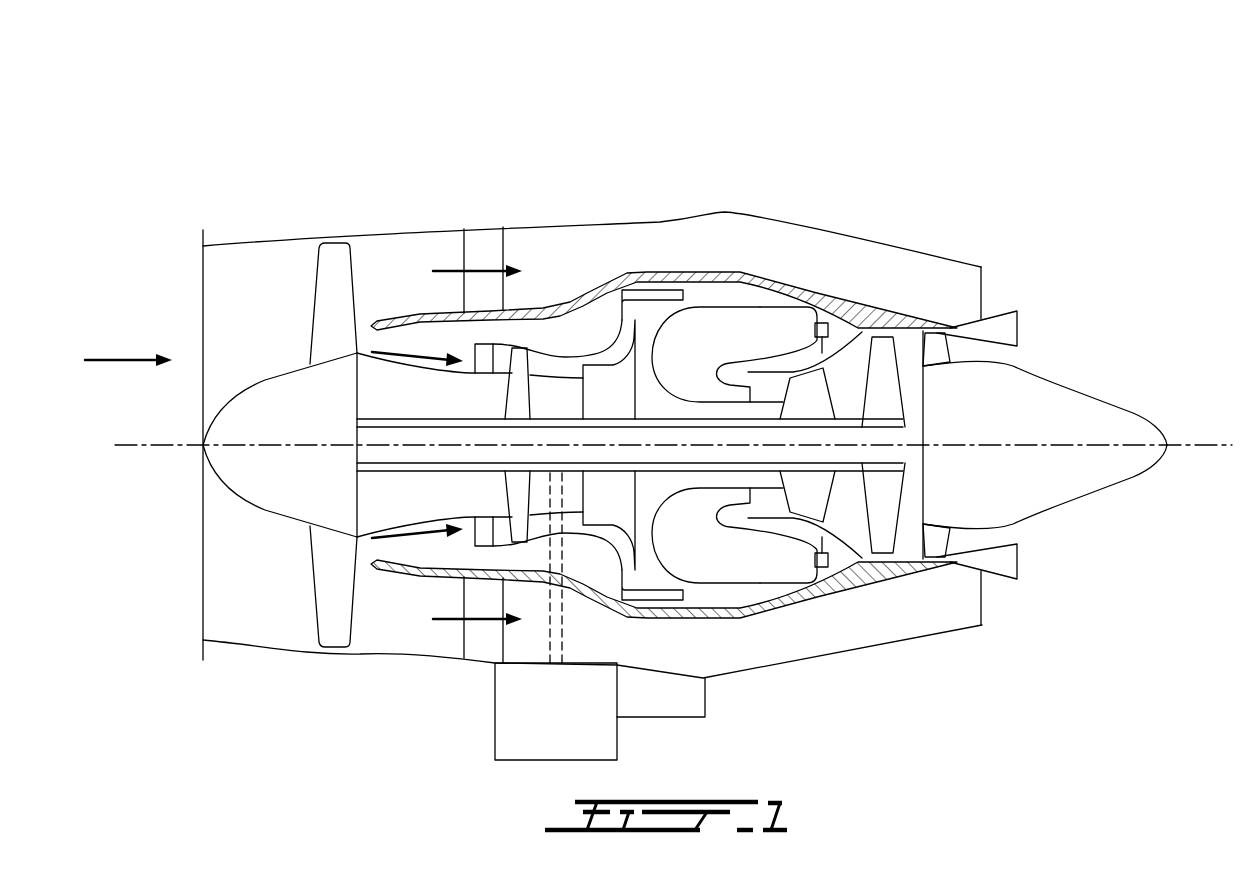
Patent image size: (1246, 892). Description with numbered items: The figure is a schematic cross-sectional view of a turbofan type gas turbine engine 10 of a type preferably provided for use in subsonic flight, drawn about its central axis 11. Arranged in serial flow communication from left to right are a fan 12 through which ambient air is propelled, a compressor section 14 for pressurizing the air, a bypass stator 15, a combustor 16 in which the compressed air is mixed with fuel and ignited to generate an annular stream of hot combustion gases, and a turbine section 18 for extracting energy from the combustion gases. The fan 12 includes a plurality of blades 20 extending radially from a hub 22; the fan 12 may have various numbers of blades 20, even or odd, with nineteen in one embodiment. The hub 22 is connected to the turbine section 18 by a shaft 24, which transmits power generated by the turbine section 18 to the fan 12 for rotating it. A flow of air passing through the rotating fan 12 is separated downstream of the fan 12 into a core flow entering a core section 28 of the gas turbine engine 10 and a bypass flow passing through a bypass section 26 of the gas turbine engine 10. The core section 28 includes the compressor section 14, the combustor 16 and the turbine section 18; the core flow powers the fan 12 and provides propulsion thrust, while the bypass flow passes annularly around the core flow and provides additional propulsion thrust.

The gas turbine engine 10 is at (874, 149).
The central longitudinal axis 11 is at (1198, 447).
The fan 12 is at (222, 502).
The compressor section 14 is at (548, 357).
The bypass stator 15 is at (483, 352).
The combustor 16 is at (741, 330).
The turbine section 18 is at (848, 502).
The blades 20 is at (327, 575).
The hub 22 is at (278, 415).
The shaft 24 is at (382, 415).
The bypass section 26 is at (403, 290).
The core section 28 is at (392, 477).